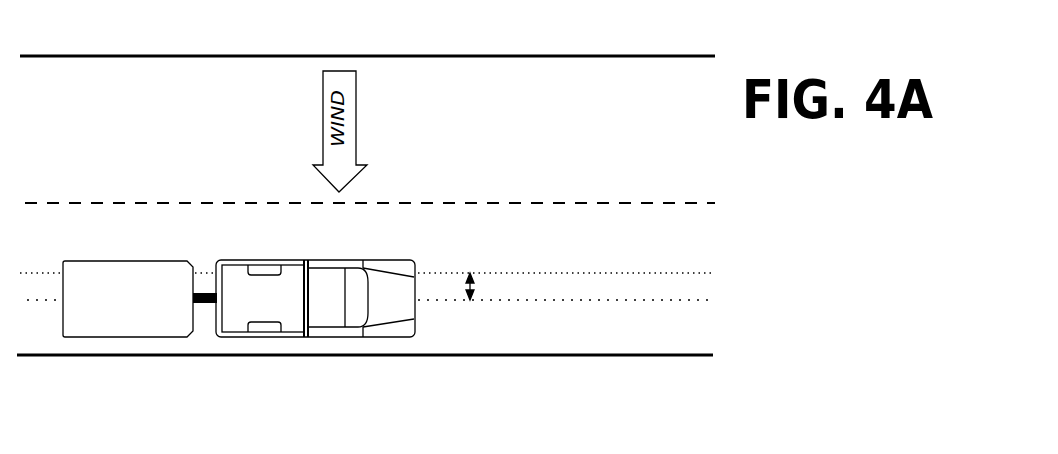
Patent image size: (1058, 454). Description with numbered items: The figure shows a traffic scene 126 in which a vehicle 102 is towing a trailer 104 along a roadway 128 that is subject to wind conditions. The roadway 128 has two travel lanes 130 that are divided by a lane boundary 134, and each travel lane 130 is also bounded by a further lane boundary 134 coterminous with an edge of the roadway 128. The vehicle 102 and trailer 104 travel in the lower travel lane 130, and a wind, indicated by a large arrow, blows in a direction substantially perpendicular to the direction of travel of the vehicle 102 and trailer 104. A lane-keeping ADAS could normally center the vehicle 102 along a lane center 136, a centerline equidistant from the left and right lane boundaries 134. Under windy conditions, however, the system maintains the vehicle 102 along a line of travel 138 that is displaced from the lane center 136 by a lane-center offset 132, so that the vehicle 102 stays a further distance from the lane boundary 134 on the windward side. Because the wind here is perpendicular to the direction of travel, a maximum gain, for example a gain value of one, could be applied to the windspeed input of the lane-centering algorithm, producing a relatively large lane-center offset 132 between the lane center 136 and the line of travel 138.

The vehicle 102 is at (283, 307).
The trailer 104 is at (143, 305).
The traffic scene 126 is at (754, 202).
The roadway 128 is at (87, 196).
The travel lane 130 is at (698, 96).
The lane-center offset 132 is at (470, 288).
The lane boundary 134 is at (237, 55).
The lane center 136 is at (578, 273).
The line of travel 138 is at (567, 300).